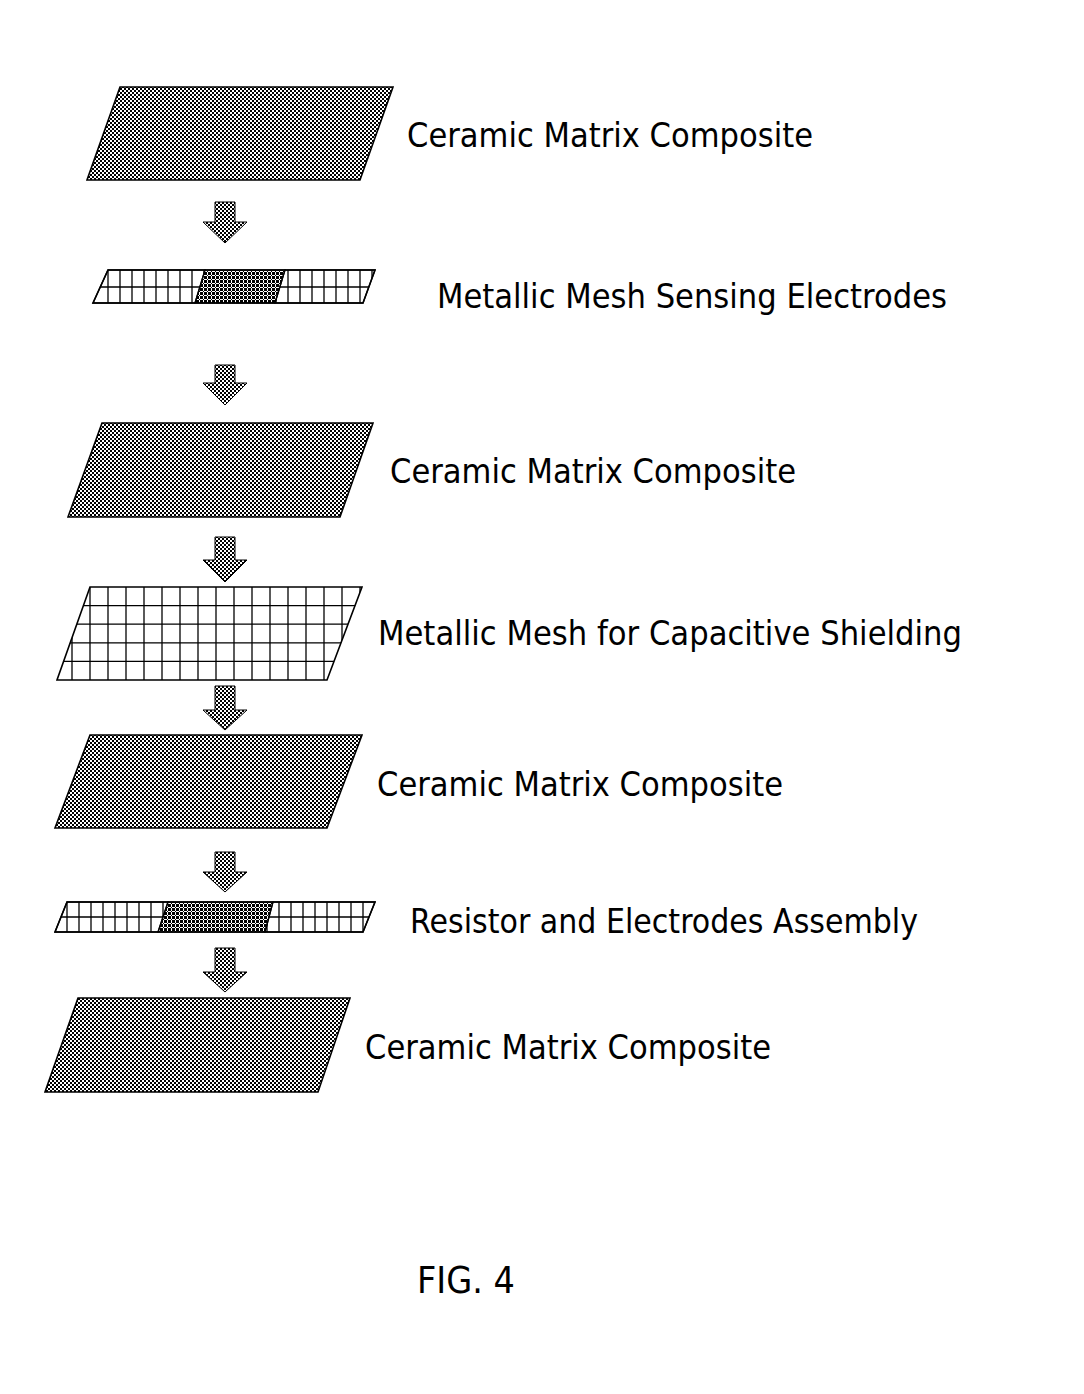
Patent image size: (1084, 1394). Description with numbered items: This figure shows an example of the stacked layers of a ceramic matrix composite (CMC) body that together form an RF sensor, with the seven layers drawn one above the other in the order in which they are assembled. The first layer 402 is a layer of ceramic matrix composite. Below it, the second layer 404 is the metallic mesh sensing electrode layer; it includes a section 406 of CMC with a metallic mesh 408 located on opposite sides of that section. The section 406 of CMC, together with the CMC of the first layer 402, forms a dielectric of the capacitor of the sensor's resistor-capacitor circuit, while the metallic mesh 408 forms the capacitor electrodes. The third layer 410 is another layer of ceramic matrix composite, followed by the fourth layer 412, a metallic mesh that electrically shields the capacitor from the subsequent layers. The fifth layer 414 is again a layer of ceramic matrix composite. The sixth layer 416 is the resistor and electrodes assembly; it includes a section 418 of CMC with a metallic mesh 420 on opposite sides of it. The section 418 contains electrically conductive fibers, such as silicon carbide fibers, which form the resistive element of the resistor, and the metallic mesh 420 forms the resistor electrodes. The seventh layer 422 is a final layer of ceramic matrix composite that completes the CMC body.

The first layer 402 is at (338, 83).
The second layer 404 is at (267, 259).
The section of CMC 406 is at (265, 280).
The metallic mesh 408 is at (120, 280).
The third layer 410 is at (333, 420).
The fourth layer 412 is at (293, 590).
The fifth layer 414 is at (297, 738).
The sixth layer 416 is at (245, 888).
The section of CMC 418 is at (247, 902).
The metallic mesh 420 is at (108, 902).
The seventh layer 422 is at (292, 997).